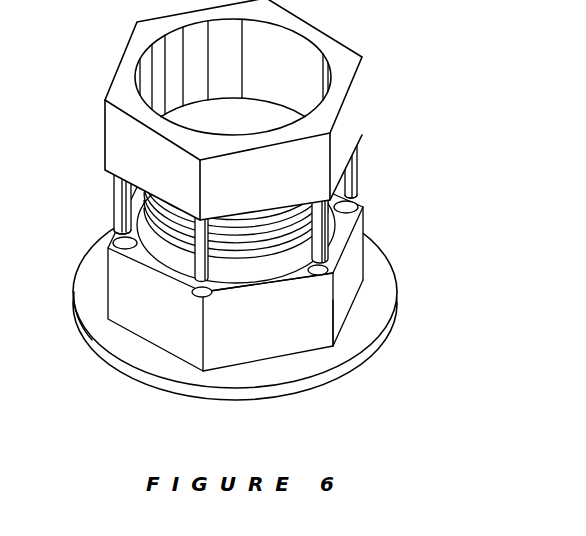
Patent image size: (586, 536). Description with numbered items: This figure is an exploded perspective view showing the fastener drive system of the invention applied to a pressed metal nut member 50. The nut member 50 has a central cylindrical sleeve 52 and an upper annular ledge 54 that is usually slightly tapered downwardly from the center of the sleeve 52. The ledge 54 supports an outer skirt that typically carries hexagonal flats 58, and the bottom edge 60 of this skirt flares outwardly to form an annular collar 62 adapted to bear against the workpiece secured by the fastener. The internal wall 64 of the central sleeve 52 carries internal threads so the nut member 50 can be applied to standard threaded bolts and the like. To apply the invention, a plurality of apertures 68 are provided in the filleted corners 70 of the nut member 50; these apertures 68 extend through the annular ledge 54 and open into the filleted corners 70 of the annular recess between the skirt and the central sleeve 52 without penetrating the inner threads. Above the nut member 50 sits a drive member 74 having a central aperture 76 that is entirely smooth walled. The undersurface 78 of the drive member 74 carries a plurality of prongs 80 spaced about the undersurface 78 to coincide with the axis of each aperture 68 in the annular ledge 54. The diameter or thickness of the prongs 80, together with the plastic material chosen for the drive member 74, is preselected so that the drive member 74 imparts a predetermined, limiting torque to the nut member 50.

The pressed metal nut member 50 is at (392, 282).
The central cylindrical sleeve 52 is at (140, 257).
The annular ledge 54 is at (347, 232).
The hexagonal flats 58 is at (332, 312).
The bottom edge 60 is at (283, 357).
The annular collar 62 is at (73, 307).
The internal wall 64 is at (157, 222).
The apertures 68 is at (115, 238).
The filleted corners 70 is at (224, 292).
The drive member 74 is at (343, 117).
The central aperture 76 is at (307, 65).
The undersurface 78 is at (355, 182).
The prongs 80 is at (118, 193).